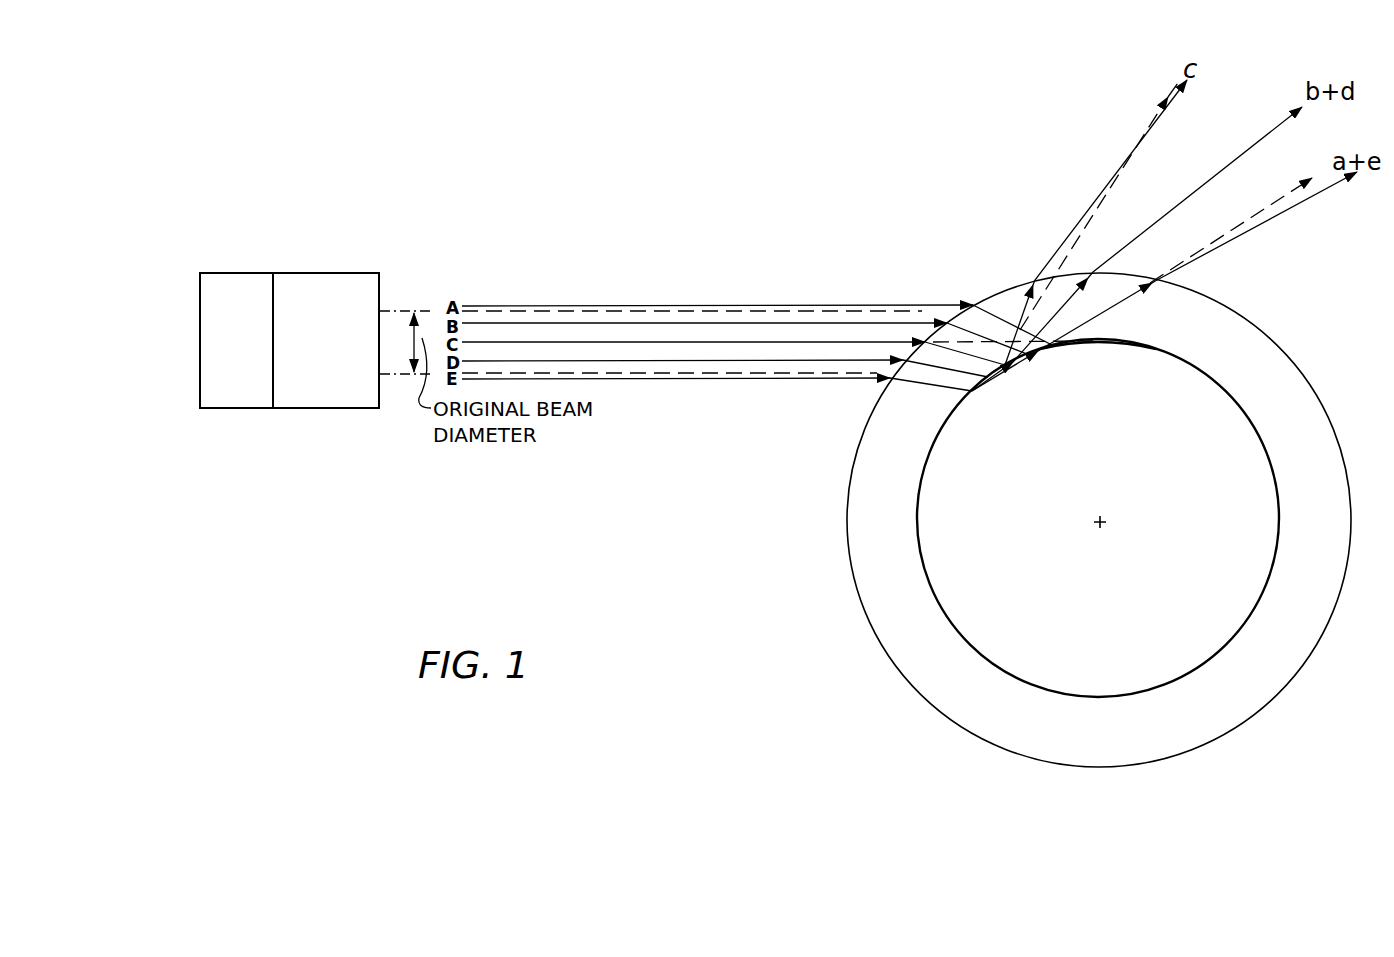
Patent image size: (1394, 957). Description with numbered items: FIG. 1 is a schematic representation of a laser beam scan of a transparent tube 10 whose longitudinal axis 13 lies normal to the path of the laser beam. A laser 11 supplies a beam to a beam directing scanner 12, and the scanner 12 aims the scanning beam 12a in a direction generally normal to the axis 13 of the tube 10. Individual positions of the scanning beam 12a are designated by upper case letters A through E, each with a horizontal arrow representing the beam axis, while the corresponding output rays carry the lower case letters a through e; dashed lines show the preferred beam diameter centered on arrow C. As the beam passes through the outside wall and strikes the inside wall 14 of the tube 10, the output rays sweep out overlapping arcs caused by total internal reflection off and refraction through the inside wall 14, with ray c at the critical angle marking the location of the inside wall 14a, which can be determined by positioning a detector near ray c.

The tube 10 is at (850, 560).
The laser 11 is at (243, 282).
The beam directing scanner 12 is at (335, 282).
The scanning beam 12a is at (724, 304).
The axis 13 is at (1097, 525).
The inside wall 14 is at (918, 492).
The location of the inside wall 14a is at (1097, 341).